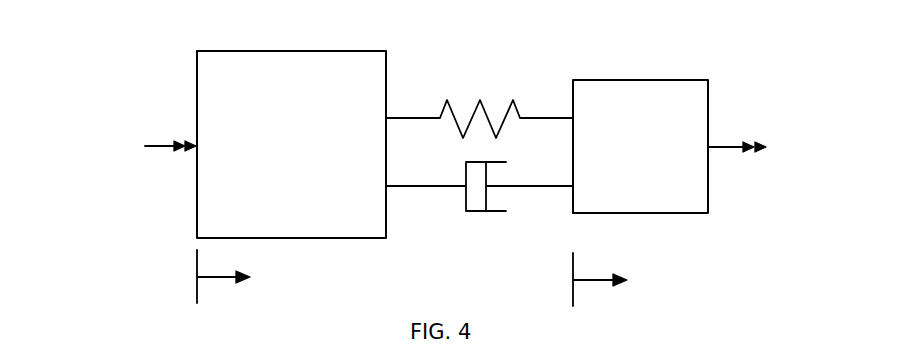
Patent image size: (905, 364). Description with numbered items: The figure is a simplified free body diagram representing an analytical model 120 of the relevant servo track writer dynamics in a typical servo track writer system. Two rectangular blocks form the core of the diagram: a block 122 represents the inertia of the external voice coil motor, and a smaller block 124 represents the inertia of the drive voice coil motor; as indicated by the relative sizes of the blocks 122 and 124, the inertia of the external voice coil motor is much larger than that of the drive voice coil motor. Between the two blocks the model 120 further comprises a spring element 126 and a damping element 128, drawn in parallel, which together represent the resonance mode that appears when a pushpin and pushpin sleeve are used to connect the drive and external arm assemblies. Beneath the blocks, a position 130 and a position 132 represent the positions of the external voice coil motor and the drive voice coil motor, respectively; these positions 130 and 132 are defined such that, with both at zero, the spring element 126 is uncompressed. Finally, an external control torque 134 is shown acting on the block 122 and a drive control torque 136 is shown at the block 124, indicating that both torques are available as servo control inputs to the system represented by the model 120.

The analytical model 120 is at (142, 72).
The block 122 is at (258, 50).
The block 124 is at (657, 80).
The spring element 126 is at (484, 112).
The damping element 128 is at (466, 200).
The position 130 is at (218, 278).
The position 132 is at (588, 283).
The external control torque 134 is at (153, 148).
The drive control torque 136 is at (726, 149).